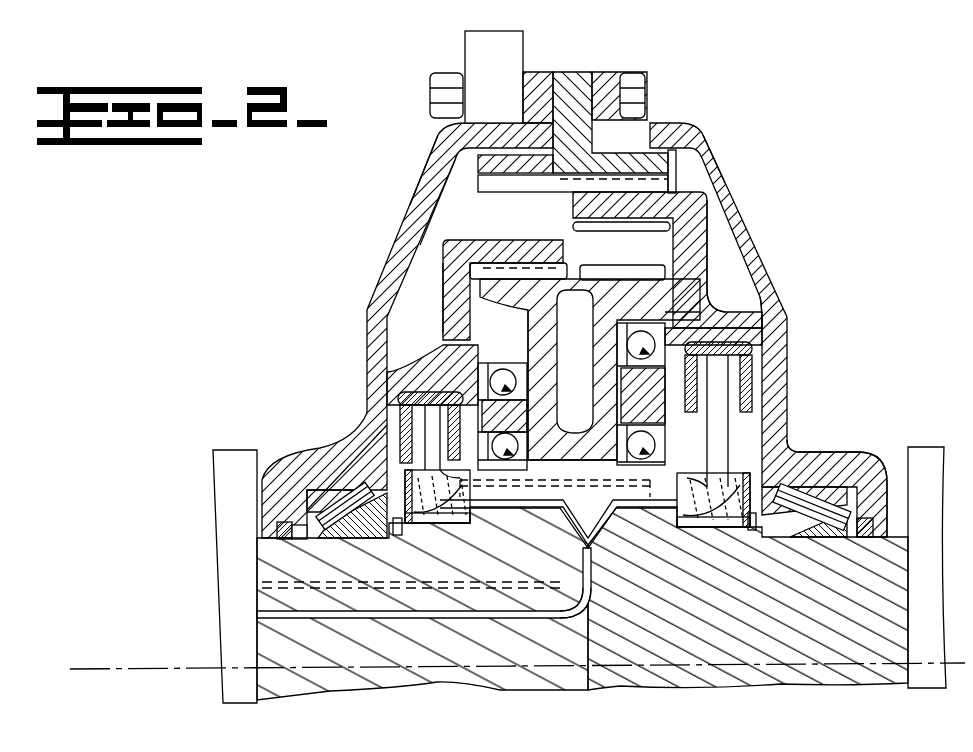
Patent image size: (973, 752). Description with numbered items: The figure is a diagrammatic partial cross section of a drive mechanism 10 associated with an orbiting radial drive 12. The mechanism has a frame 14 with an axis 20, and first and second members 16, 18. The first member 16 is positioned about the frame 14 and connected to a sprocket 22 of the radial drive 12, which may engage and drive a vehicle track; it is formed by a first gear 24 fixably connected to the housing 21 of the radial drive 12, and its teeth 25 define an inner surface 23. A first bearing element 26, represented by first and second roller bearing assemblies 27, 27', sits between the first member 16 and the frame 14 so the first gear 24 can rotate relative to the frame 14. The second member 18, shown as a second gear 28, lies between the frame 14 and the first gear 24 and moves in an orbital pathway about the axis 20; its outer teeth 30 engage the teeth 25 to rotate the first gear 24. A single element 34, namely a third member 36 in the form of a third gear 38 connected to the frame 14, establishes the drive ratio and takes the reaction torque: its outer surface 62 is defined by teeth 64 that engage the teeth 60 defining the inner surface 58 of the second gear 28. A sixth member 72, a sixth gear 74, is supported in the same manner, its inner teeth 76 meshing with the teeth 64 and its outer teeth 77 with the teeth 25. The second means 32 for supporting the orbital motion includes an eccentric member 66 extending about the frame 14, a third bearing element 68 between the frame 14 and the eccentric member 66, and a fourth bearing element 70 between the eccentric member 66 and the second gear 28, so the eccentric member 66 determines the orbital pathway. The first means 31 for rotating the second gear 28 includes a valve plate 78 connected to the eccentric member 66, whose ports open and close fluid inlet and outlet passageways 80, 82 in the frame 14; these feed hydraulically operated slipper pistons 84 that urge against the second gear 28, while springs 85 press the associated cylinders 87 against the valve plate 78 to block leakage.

The drive mechanism 10 is at (240, 527).
The orbiting radial drive 12 is at (800, 126).
The frame 14 is at (795, 620).
The first member 16 is at (406, 208).
The second member 18 is at (428, 293).
The axis 20 is at (145, 670).
The housing 21 is at (427, 173).
The sprocket 22 is at (521, 48).
The inner surface 23 is at (484, 199).
The first gear 24 is at (633, 160).
The teeth 25 is at (716, 160).
The first bearing element 26 is at (810, 457).
The first roller bearing assembly 27 is at (325, 478).
The second roller bearing assembly 27' is at (841, 478).
The second gear 28 is at (447, 306).
The teeth 30 is at (563, 230).
The first means 31 is at (440, 575).
The second means 32 is at (541, 383).
The single element 34 is at (742, 322).
The third member 36 is at (698, 342).
The third gear 38 is at (722, 296).
The inner surface 58 is at (536, 289).
The teeth 60 is at (440, 268).
The outer surface 62 is at (700, 237).
The teeth 64 is at (690, 275).
The eccentric member 66 is at (520, 413).
The third bearing element 68 is at (582, 595).
The fourth bearing element 70 is at (467, 363).
The sixth member 72 is at (710, 330).
The sixth gear 74 is at (688, 193).
The inner teeth 76 is at (634, 228).
The outer teeth 77 is at (673, 186).
The valve plate 78 is at (603, 530).
The fluid inlet passageway 80 is at (525, 617).
The fluid outlet passageway 82 is at (594, 605).
The slipper pistons 84 is at (400, 421).
The springs 85 is at (425, 513).
The cylinders 87 is at (450, 507).